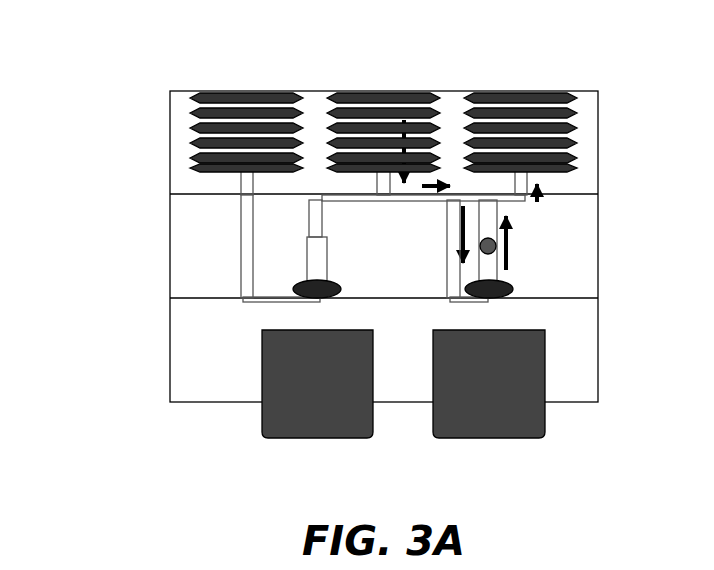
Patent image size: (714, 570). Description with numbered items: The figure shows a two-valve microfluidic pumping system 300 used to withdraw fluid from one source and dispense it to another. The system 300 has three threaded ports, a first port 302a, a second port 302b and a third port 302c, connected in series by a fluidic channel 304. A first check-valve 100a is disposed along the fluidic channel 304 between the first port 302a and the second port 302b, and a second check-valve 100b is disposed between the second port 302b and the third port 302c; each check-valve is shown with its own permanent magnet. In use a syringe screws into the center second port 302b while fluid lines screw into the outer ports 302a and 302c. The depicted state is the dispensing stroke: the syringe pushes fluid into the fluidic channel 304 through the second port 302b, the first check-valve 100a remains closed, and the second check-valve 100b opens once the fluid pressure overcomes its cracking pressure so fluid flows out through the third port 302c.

The two-valve microfluidic pumping system 300 is at (143, 80).
The first port 302a is at (243, 92).
The second port 302b is at (383, 92).
The third port 302c is at (520, 92).
The fluidic channel 304 is at (245, 245).
The first check-valve 100a is at (262, 315).
The second check-valve 100b is at (548, 316).